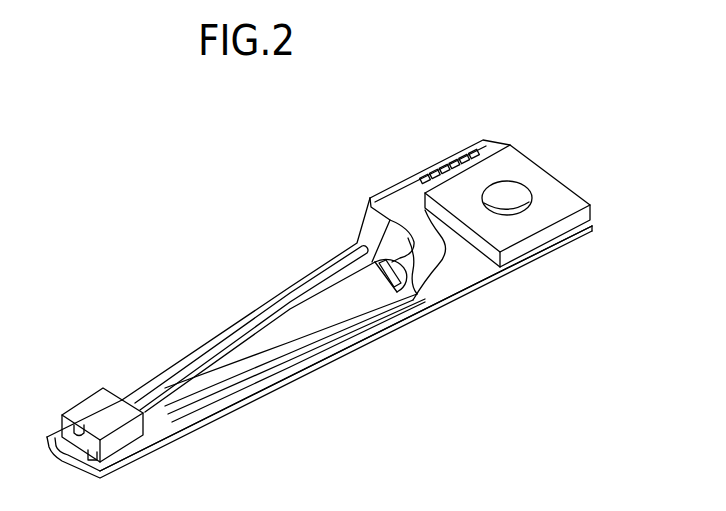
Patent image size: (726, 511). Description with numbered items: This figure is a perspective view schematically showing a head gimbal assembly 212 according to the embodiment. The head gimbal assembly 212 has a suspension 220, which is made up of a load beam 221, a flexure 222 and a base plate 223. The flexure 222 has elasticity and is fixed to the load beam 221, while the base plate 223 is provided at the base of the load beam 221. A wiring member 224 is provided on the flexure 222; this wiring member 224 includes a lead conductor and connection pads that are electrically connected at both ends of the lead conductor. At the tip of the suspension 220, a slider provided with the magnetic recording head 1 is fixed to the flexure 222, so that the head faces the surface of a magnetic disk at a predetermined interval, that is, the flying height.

The magnetic recording head 1 is at (92, 407).
The head gimbal assembly 212 is at (325, 175).
The suspension 220 is at (313, 267).
The load beam 221 is at (432, 296).
The flexure 222 is at (357, 330).
The base plate 223 is at (532, 222).
The wiring member 224 is at (223, 385).